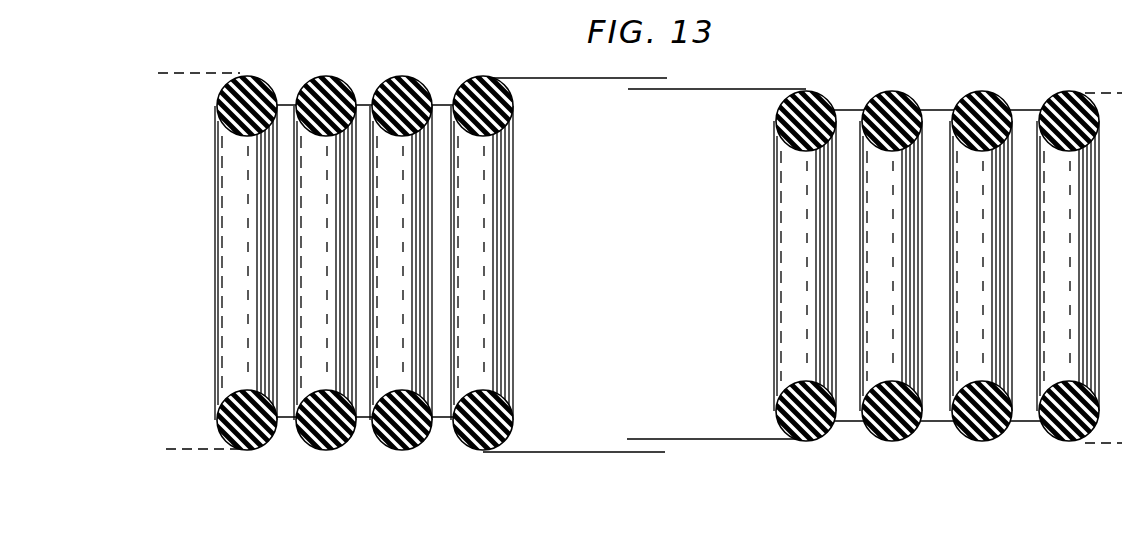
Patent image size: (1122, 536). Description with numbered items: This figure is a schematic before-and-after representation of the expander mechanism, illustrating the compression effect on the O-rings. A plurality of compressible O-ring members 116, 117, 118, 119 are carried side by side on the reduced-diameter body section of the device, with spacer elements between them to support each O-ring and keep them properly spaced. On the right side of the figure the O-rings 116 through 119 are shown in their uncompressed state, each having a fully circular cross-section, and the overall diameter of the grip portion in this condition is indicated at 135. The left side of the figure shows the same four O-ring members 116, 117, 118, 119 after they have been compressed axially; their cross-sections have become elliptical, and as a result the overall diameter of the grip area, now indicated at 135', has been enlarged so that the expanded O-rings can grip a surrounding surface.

The compressible O-ring member 116 is at (526, 263).
The compressible O-ring member 117 is at (609, 263).
The compressible O-ring member 118 is at (692, 263).
The compressible O-ring member 119 is at (776, 263).
The overall diameter of the grip portion 135 is at (716, 284).
The enlarged overall diameter of the grip area 135' is at (575, 287).